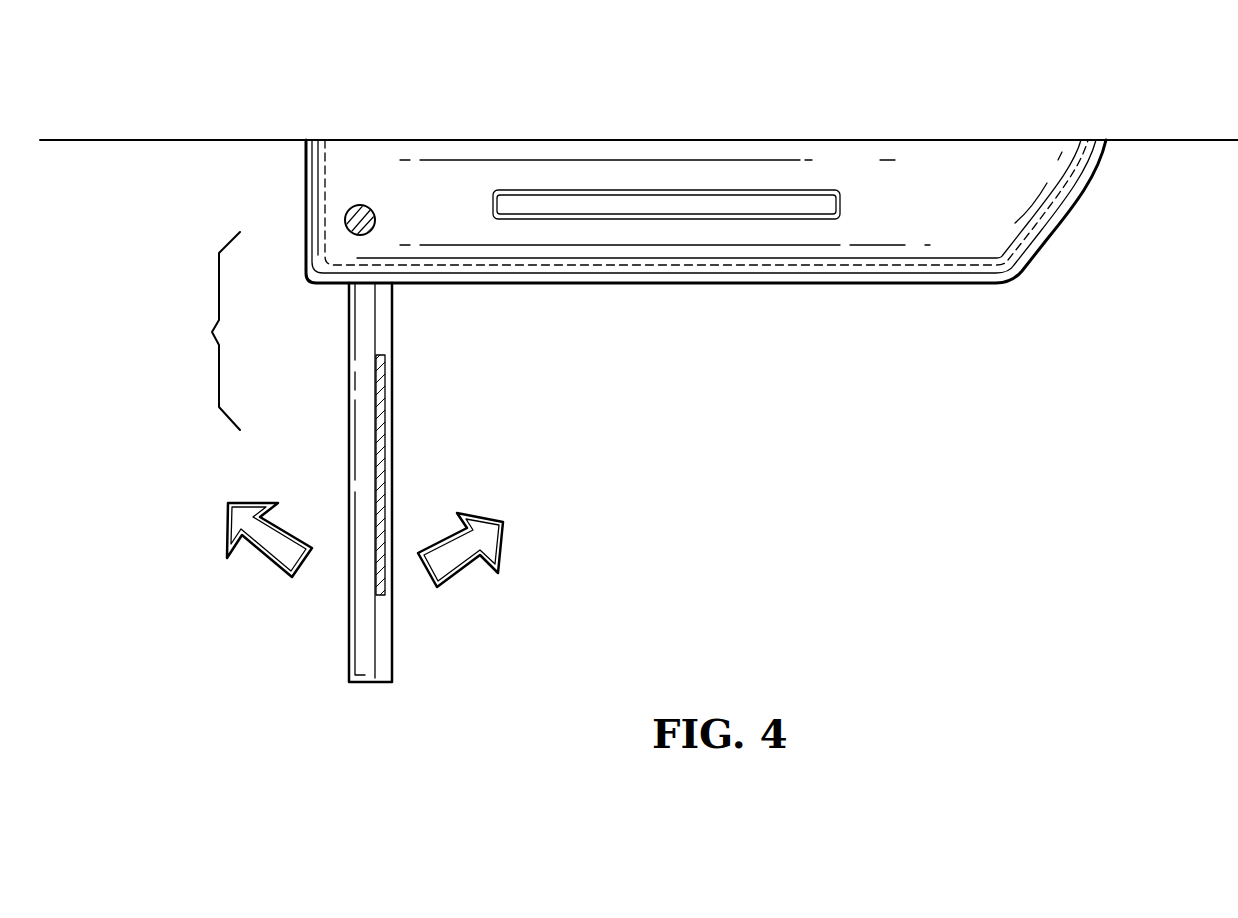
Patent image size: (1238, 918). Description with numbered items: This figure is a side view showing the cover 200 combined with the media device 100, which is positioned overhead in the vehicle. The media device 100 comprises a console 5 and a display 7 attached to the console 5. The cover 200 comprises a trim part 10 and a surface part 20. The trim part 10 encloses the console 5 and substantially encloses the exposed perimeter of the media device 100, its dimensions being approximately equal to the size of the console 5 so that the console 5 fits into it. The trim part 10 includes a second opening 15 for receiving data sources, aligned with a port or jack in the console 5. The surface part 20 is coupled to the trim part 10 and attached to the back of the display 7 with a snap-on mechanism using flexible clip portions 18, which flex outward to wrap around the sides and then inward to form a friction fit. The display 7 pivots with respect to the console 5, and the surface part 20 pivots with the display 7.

The media device 100 is at (1022, 172).
The trim part 10 is at (1045, 240).
The console 5 is at (940, 245).
The second opening 15 is at (800, 205).
The flexible clip portions 18 is at (385, 375).
The display 7 is at (385, 650).
The surface part 20 is at (360, 621).
The cover 200 is at (208, 331).